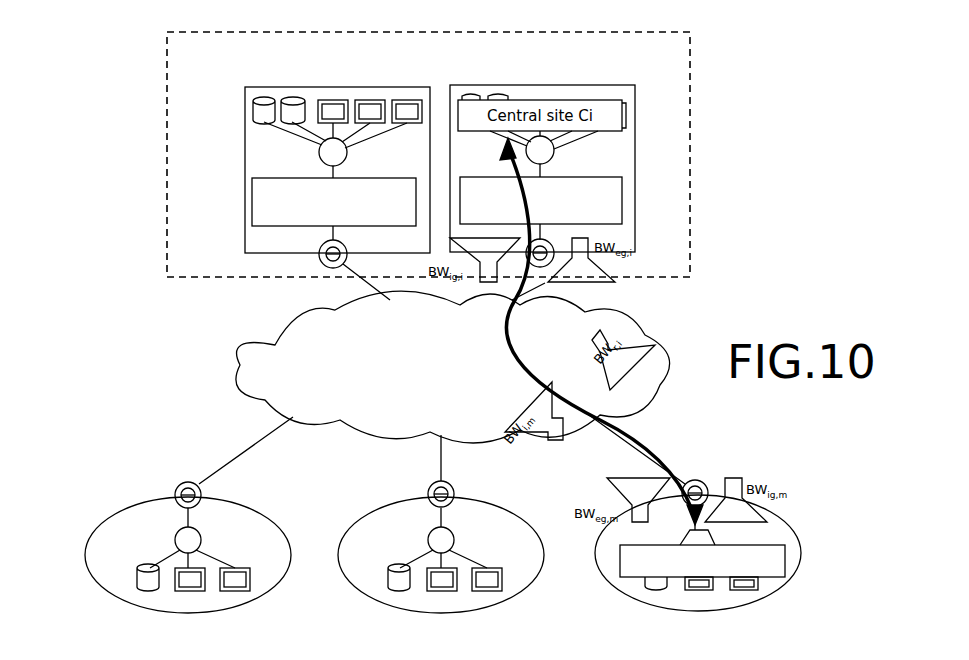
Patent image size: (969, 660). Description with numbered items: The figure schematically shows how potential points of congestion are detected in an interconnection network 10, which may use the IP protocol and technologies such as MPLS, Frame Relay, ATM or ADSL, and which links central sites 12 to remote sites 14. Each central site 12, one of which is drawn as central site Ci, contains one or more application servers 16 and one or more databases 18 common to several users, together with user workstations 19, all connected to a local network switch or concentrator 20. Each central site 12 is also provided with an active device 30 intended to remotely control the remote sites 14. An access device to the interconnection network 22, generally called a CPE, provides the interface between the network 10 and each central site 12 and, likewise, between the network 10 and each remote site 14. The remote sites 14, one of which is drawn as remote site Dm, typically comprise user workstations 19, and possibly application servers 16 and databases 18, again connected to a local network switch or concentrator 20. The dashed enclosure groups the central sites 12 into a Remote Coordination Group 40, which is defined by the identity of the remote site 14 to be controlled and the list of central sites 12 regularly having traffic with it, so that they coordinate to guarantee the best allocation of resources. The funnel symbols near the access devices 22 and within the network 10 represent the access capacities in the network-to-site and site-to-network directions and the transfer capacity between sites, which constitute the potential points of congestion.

The Remote Coordination Group 40 is at (148, 50).
The central site 12 is at (245, 126).
The database 18 is at (264, 97).
The application server 16 is at (292, 97).
The user workstation 19 is at (405, 105).
The local network switch or concentrator 20 is at (320, 158).
The active device 30 is at (260, 215).
The access device to the interconnection network 22 is at (336, 266).
The interconnection network 10 is at (266, 352).
The remote site 14 is at (90, 578).